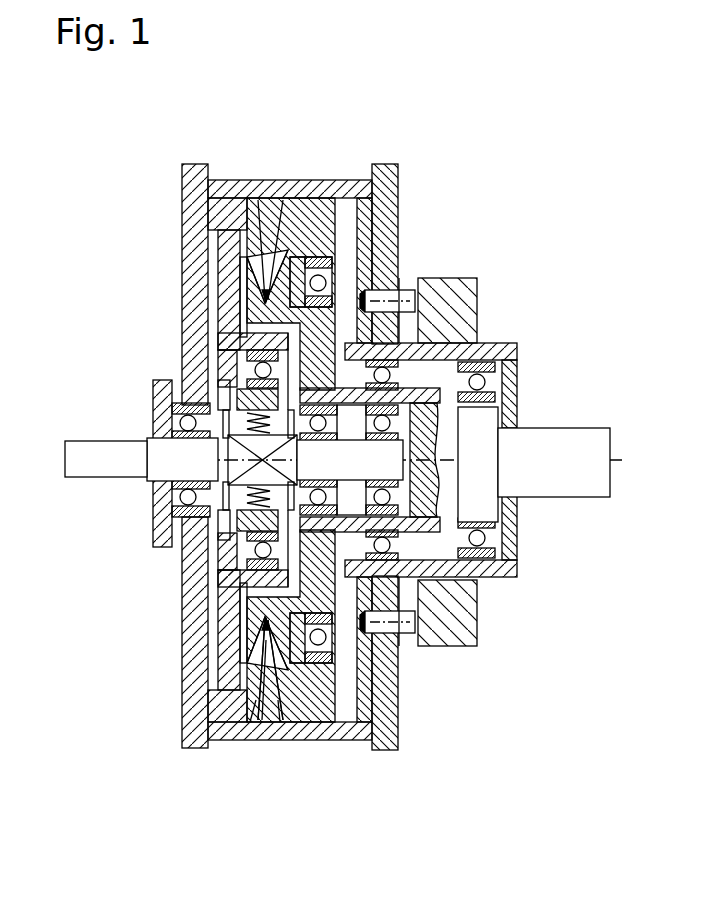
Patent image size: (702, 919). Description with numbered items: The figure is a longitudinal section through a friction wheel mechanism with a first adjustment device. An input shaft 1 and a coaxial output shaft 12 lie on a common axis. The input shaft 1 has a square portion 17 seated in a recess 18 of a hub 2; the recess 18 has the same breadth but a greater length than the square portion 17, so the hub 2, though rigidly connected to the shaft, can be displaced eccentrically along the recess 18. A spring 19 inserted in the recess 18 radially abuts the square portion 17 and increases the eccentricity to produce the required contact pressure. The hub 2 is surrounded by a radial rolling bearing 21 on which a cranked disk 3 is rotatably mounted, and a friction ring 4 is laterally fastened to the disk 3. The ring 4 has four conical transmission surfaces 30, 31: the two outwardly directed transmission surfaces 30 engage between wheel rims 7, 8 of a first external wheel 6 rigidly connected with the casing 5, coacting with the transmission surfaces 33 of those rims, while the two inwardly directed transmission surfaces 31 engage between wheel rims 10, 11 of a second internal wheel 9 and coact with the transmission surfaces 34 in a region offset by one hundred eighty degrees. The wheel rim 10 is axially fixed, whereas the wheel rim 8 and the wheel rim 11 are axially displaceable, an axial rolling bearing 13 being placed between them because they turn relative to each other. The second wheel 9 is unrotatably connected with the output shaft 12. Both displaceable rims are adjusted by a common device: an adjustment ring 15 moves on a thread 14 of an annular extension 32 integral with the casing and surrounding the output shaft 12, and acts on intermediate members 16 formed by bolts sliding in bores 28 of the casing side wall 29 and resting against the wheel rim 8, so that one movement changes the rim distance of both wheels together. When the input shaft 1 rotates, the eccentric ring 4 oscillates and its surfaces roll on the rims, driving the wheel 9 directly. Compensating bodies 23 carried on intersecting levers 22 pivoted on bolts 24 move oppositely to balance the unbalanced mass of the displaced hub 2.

The input shaft 1 is at (78, 452).
The hub 2 is at (245, 565).
The cranked disk 3 is at (238, 612).
The ring 4 is at (258, 672).
The casing 5 is at (195, 670).
The first external wheel 6 is at (266, 740).
The wheel rim 7 is at (220, 742).
The wheel rim 8 is at (291, 740).
The second internal wheel 9 is at (267, 290).
The wheel rim 10 is at (250, 281).
The wheel rim 11 is at (297, 297).
The output shaft 12 is at (573, 446).
The axial rolling bearing 13 is at (333, 262).
The thread 14 is at (487, 348).
The adjustment ring 15 is at (455, 285).
The intermediate members 16 is at (396, 300).
The square portion 17 is at (147, 440).
The recess 18 is at (227, 413).
The spring 19 is at (260, 413).
The radial rolling bearing 21 is at (242, 590).
The levers 22 is at (227, 498).
The compensating bodies 23 is at (227, 527).
The bolts 24 is at (230, 423).
The bores 28 is at (402, 298).
The casing side wall 29 is at (385, 712).
The transmission surfaces 30 is at (262, 690).
The transmission surfaces 31 is at (250, 265).
The annular extension 32 is at (493, 353).
The transmission surfaces 33 is at (244, 740).
The transmission surfaces 34 is at (250, 283).